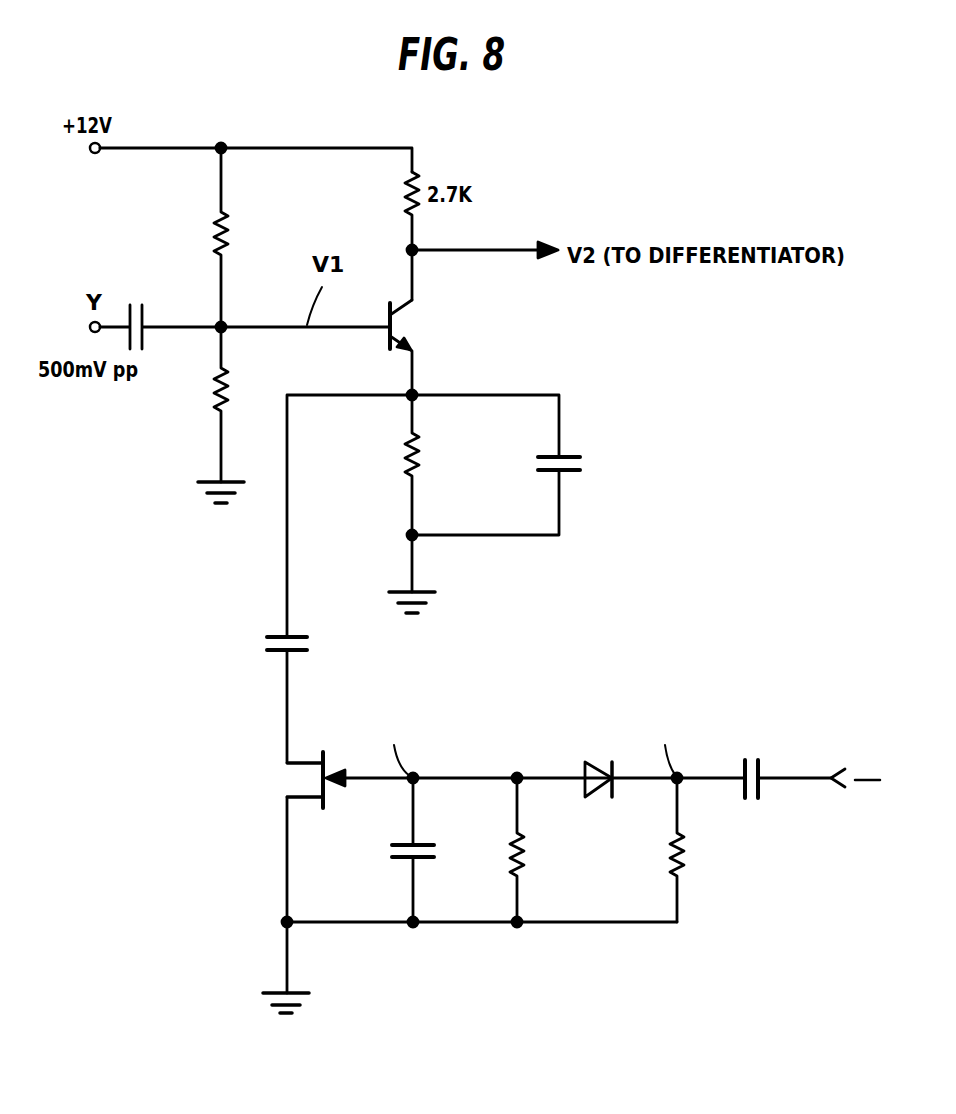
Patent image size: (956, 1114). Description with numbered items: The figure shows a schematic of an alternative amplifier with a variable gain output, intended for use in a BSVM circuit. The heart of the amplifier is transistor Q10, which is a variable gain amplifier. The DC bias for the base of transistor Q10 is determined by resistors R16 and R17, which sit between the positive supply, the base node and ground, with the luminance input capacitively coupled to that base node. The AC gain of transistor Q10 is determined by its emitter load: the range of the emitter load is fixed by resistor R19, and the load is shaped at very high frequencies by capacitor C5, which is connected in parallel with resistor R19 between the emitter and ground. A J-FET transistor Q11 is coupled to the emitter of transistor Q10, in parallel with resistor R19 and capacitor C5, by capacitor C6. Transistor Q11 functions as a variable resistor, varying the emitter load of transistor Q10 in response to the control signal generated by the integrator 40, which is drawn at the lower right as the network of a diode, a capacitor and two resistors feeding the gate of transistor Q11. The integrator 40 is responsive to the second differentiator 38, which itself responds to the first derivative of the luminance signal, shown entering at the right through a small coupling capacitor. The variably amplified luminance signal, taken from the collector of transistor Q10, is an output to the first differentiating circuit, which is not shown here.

The second differentiator 38 is at (815, 857).
The integrator 40 is at (475, 910).
The resistor R16 is at (247, 237).
The resistor R17 is at (248, 404).
The resistor R19 is at (383, 493).
The capacitor C5 is at (585, 466).
The capacitor C6 is at (257, 656).
The transistor Q10 is at (419, 347).
The J-FET transistor Q11 is at (280, 780).